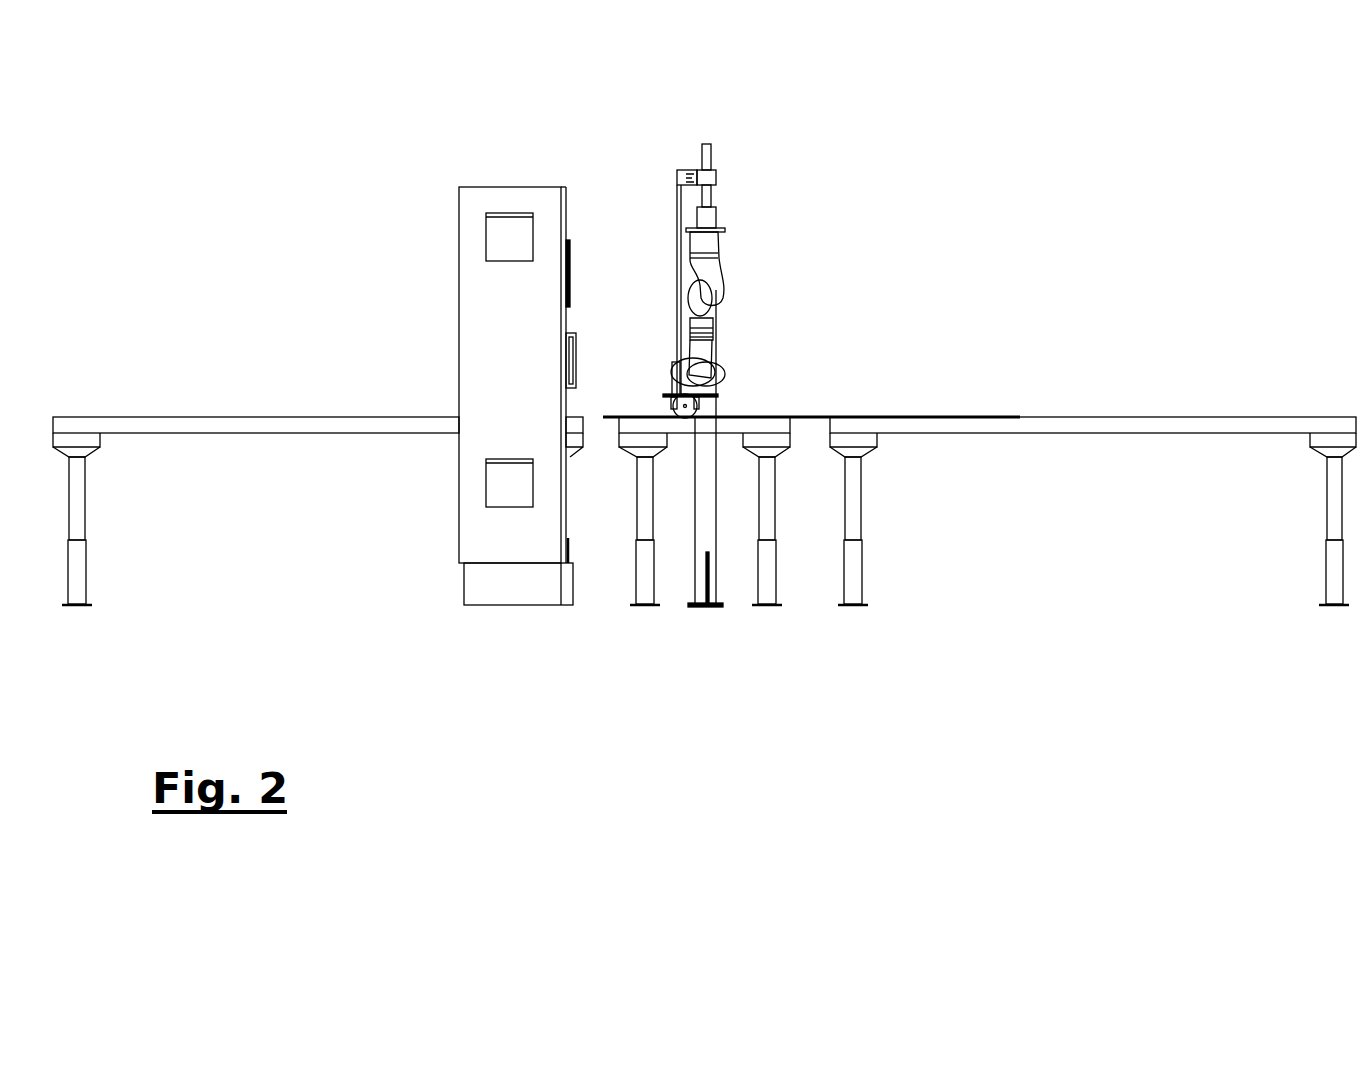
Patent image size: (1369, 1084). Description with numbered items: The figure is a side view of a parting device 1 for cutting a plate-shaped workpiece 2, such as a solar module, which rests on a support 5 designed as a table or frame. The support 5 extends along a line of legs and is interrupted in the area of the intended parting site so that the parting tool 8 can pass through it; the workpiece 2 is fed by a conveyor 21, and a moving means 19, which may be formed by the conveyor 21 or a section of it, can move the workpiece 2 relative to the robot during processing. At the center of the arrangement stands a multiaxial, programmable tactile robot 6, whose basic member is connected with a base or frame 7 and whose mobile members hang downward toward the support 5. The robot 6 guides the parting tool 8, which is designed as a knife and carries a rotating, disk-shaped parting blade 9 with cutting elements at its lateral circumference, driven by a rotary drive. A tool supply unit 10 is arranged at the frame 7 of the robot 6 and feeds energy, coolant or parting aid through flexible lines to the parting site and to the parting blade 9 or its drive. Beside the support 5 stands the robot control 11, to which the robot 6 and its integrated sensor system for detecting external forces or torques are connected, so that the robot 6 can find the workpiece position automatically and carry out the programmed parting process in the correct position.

The parting device 1 is at (981, 235).
The workpiece 2 is at (909, 416).
The support 5 is at (1100, 428).
The conveyor 21 is at (1093, 511).
The robot 6 is at (718, 292).
The frame 7 is at (679, 240).
The parting tool 8 is at (678, 402).
The parting blade 9 is at (690, 406).
The tool supply unit 10 is at (716, 180).
The robot control 11 is at (497, 293).
The moving means 19 is at (682, 443).